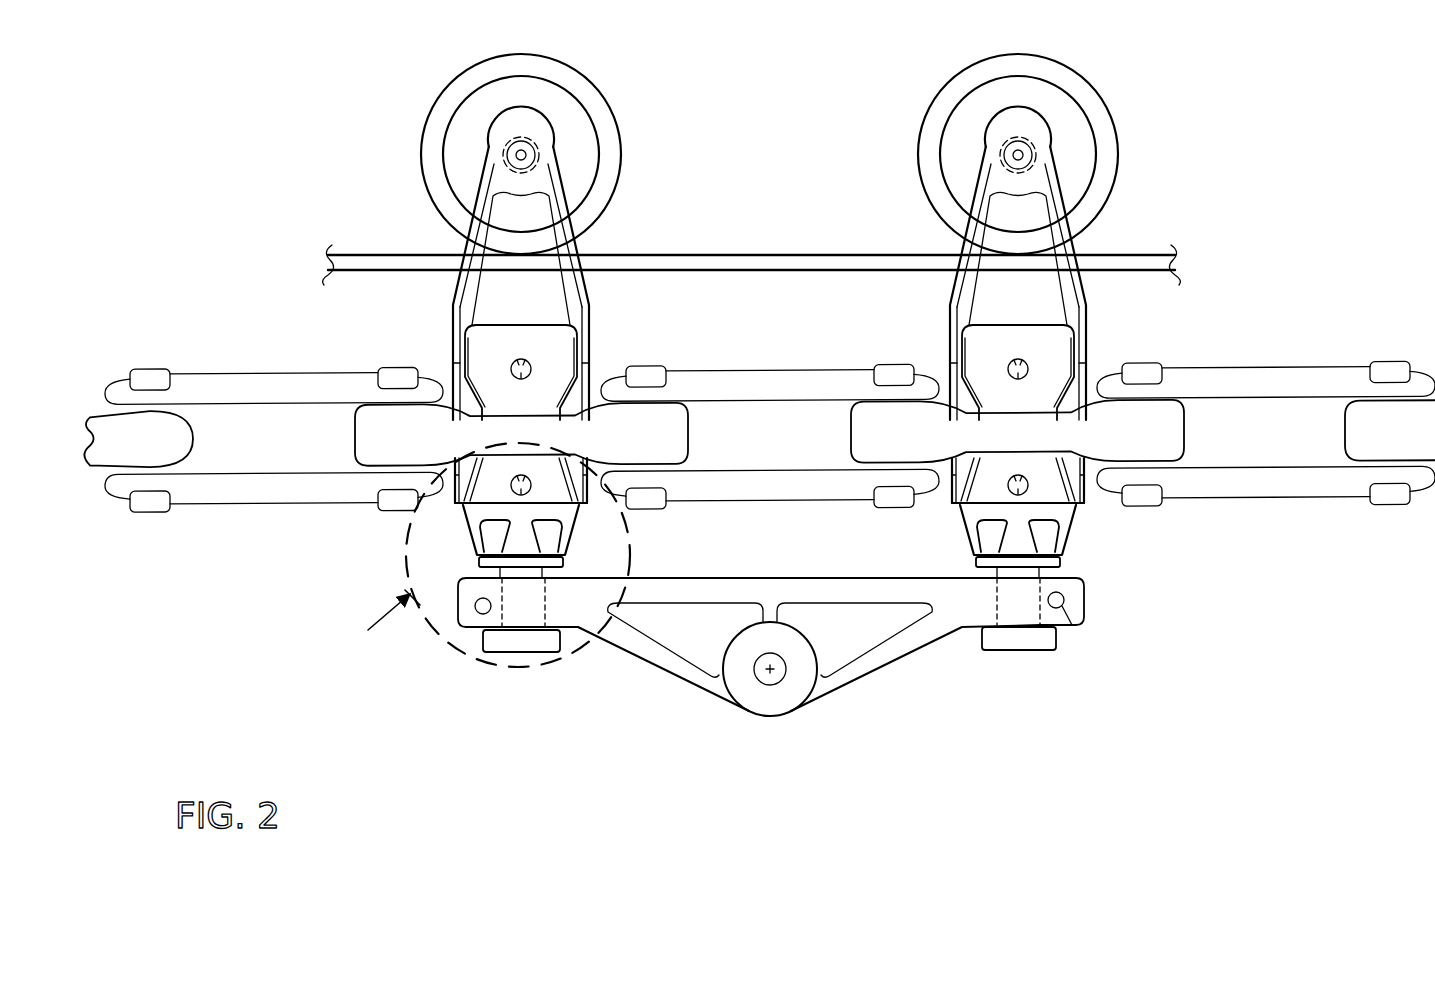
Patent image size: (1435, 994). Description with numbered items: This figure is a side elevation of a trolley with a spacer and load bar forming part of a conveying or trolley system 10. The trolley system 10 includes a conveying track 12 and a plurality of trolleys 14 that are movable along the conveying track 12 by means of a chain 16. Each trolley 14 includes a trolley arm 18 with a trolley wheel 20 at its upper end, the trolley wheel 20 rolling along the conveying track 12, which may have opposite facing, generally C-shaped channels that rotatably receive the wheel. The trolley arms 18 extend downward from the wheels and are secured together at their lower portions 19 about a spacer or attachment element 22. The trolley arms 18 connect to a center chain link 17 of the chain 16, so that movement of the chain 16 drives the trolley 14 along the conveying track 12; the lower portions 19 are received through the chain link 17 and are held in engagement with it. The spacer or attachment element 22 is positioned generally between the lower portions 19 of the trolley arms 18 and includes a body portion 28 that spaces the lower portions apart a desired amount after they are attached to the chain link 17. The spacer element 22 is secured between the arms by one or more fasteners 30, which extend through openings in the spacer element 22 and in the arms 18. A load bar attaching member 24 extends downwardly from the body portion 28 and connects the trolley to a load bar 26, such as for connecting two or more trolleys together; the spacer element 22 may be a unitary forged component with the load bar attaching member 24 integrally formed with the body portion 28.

The trolley system 10 is at (258, 158).
The conveying track 12 is at (723, 252).
The trolley 14 is at (640, 188).
The chain 16 is at (1292, 330).
The chain link 17 is at (690, 434).
The trolley arm 18 is at (595, 288).
The lower portion 19 is at (960, 483).
The trolley wheel 20 is at (445, 97).
The spacer or attachment element 22 is at (1090, 520).
The load bar attaching member 24 is at (1015, 682).
The load bar 26 is at (845, 688).
The body portion 28 is at (955, 512).
The fastener 30 is at (528, 367).